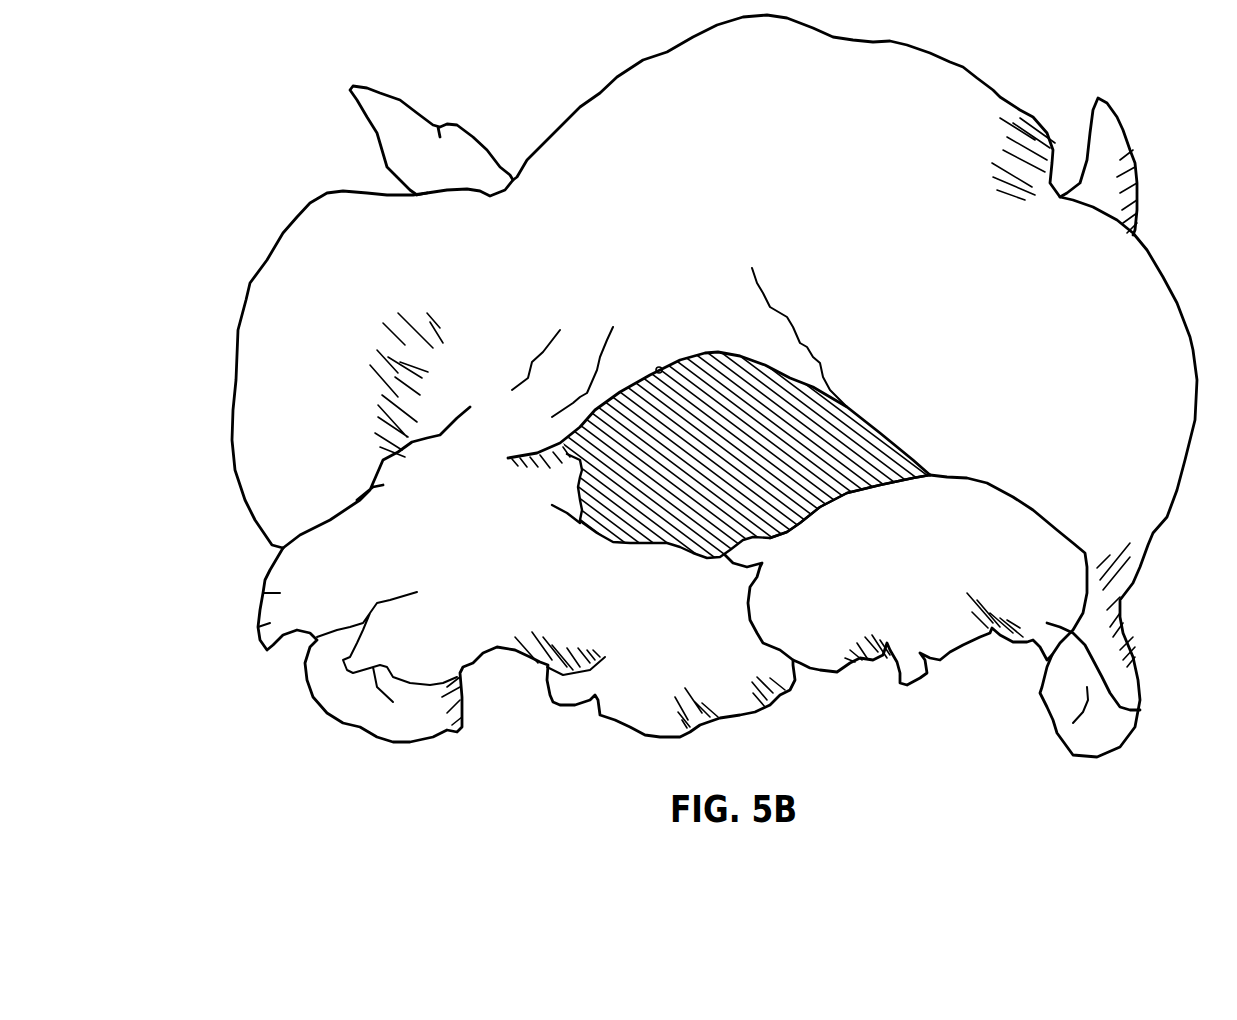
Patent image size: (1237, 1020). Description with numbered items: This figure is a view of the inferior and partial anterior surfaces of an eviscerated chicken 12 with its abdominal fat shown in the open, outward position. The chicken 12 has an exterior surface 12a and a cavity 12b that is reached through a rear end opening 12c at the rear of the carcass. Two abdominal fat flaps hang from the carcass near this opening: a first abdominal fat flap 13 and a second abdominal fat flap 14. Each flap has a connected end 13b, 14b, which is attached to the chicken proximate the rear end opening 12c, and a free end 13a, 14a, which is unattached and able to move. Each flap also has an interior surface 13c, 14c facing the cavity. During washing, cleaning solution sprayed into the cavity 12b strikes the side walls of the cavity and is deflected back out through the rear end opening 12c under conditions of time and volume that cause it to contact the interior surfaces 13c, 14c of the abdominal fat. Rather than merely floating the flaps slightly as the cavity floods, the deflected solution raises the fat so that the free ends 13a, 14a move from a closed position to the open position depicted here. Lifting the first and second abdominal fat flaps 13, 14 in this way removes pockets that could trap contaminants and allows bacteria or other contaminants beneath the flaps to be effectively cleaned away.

The chicken 12 is at (260, 493).
The exterior surface 12a is at (312, 232).
The cavity 12b is at (850, 455).
The rear end opening 12c is at (655, 367).
The first abdominal fat flap 13 is at (468, 538).
The free end 13a is at (268, 625).
The connected end 13b is at (578, 500).
The interior surface 13c is at (523, 588).
The second abdominal fat flap 14 is at (950, 555).
The free end 14a is at (1140, 710).
The connected end 14b is at (882, 535).
The interior surface 14c is at (882, 610).